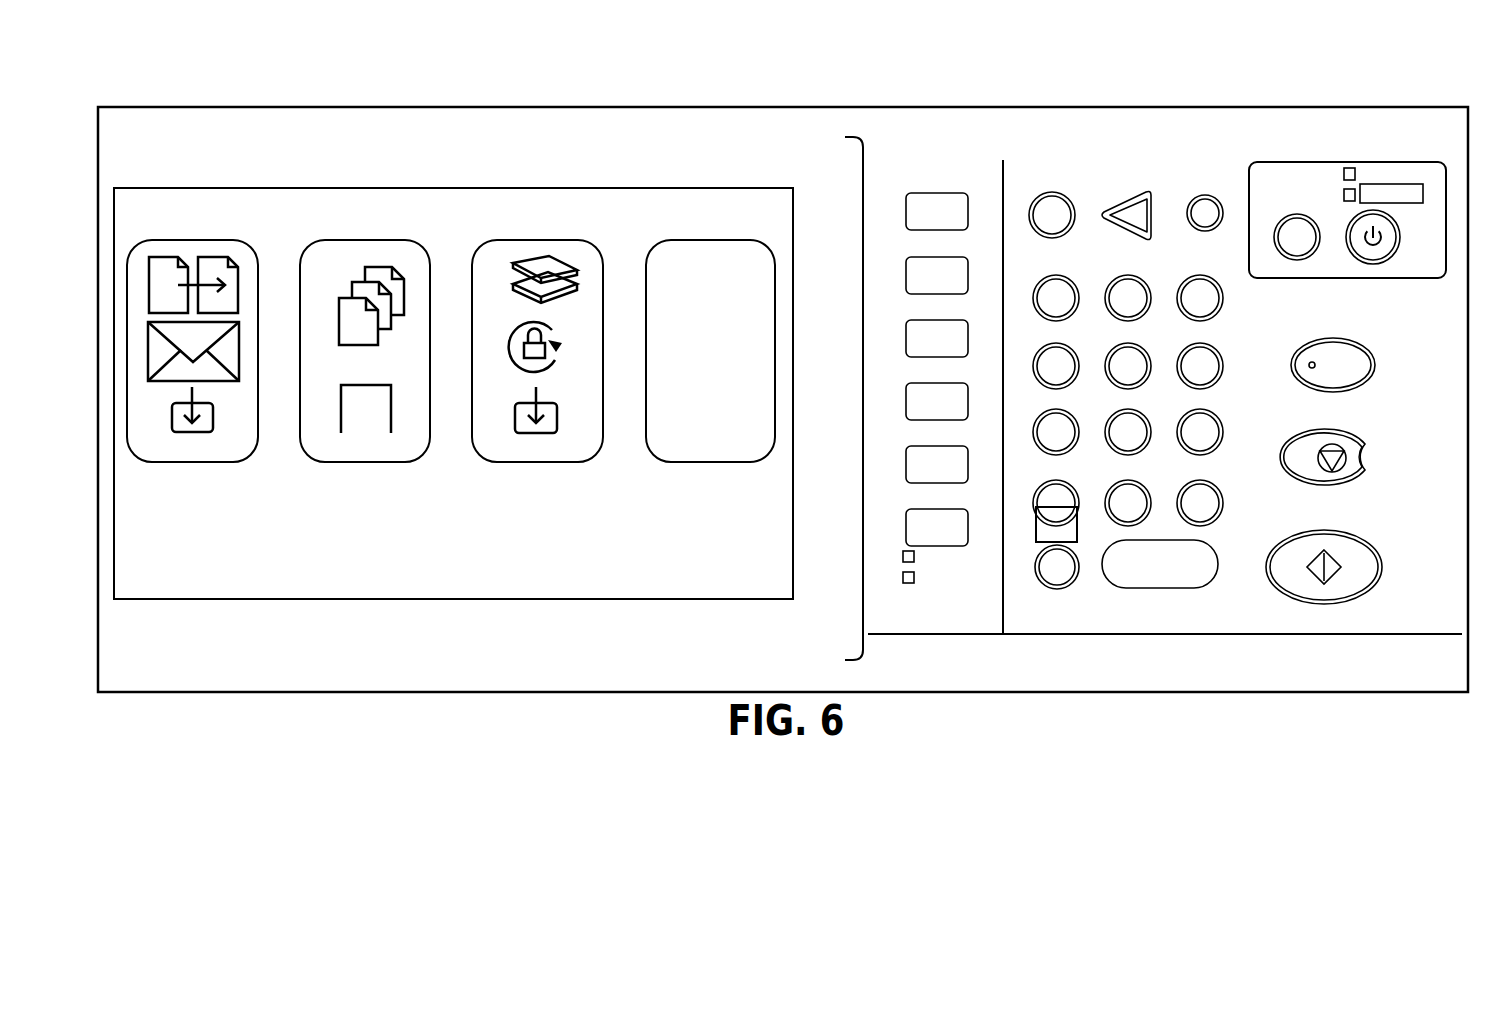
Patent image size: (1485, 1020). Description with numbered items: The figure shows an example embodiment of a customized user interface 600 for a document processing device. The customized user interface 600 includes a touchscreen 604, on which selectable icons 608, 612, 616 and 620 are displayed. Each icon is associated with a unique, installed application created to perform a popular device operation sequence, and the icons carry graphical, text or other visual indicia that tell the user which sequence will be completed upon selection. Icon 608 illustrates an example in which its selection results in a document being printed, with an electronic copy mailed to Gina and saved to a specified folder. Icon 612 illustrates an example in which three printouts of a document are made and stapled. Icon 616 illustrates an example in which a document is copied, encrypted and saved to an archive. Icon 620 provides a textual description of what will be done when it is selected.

The customized user interface 600 is at (1338, 70).
The touchscreen 604 is at (827, 155).
The icon 608 is at (192, 240).
The icon 612 is at (363, 240).
The icon 616 is at (528, 240).
The icon 620 is at (701, 240).